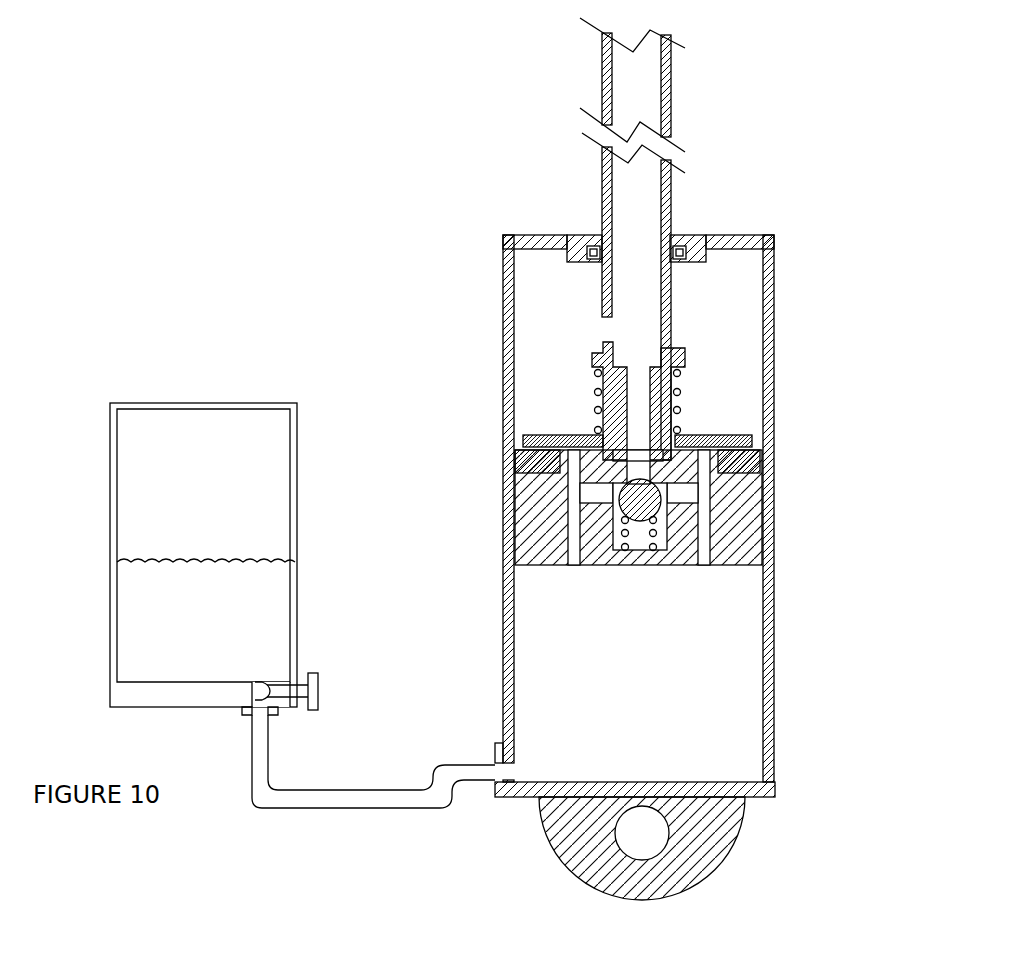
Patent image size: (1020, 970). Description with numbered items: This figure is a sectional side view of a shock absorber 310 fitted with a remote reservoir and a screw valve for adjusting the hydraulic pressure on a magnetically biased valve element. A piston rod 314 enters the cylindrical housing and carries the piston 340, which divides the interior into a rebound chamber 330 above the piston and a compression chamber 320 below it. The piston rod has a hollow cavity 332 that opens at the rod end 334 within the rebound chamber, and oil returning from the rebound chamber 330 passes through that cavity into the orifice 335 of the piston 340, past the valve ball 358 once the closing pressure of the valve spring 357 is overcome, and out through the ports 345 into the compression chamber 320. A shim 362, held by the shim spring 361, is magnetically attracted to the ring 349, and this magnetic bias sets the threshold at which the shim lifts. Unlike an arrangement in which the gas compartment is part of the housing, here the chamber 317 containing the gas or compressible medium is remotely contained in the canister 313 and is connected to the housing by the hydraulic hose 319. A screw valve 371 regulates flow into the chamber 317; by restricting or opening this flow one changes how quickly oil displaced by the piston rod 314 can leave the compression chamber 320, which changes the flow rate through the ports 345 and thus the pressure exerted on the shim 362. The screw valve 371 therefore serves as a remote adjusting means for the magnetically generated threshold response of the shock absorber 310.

The shock absorber 310 is at (415, 181).
The canister 313 is at (265, 403).
The piston rod 314 is at (603, 163).
The chamber 317 is at (157, 500).
The hydraulic hose 319 is at (365, 800).
The compression chamber 320 is at (635, 567).
The rebound chamber 330 is at (553, 296).
The hollow cavity 332 is at (648, 338).
The rod end 334 is at (607, 330).
The orifice 335 is at (637, 458).
The piston 340 is at (638, 534).
The ports 345 is at (577, 558).
The ring 349 is at (760, 453).
The valve spring 357 is at (653, 533).
The valve ball 358 is at (640, 503).
The shim spring 361 is at (682, 368).
The shim 362 is at (695, 437).
The screw valve 371 is at (316, 680).